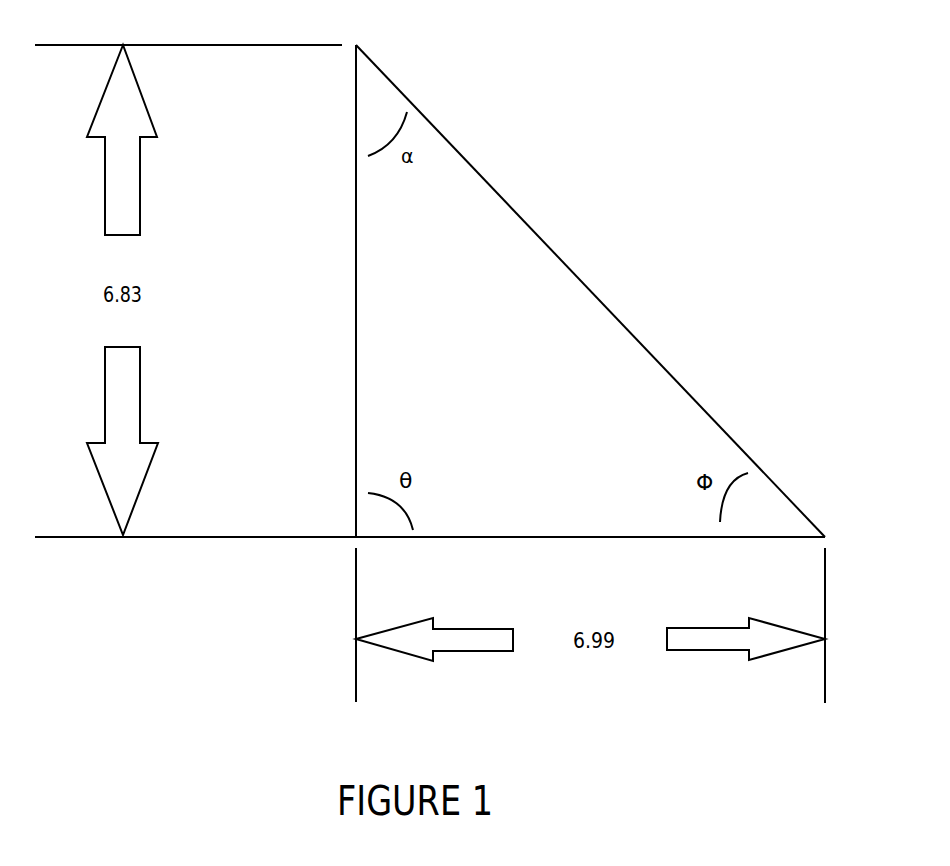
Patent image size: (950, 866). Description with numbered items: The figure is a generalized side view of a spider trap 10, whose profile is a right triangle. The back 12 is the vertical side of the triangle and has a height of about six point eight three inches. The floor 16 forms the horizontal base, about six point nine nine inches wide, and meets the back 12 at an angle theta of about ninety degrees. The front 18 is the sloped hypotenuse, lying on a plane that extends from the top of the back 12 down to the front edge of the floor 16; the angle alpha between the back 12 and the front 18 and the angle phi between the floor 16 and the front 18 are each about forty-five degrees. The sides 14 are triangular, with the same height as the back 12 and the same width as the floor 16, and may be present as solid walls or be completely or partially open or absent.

The spider trap 10 is at (532, 384).
The back 12 is at (356, 300).
The sides 14 is at (405, 378).
The floor 16 is at (645, 537).
The front 18 is at (565, 260).